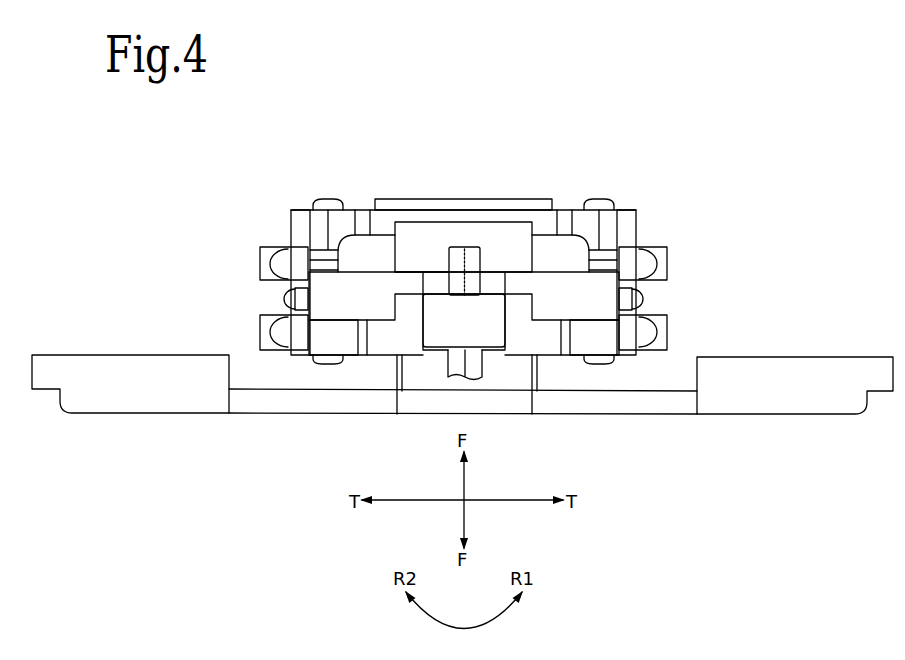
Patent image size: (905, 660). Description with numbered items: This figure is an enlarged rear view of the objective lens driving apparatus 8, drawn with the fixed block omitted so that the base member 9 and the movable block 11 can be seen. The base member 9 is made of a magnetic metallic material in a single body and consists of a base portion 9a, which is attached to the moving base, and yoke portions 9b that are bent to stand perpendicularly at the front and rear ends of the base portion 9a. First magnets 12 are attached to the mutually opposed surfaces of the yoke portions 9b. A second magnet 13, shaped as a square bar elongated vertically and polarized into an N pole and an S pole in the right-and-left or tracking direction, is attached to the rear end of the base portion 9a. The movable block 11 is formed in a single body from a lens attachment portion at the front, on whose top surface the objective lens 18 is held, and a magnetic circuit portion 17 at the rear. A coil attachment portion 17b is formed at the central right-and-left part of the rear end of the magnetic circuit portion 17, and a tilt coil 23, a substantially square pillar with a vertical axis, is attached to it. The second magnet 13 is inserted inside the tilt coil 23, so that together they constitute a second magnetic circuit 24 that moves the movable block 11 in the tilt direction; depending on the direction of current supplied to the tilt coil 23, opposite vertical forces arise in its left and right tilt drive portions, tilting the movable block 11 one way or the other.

The objective lens driving apparatus 8 is at (517, 286).
The base member 9 is at (462, 415).
The base portion 9a is at (305, 405).
The yoke portions 9b is at (512, 382).
The movable block 11 is at (561, 225).
The first magnets 12 is at (502, 233).
The second magnet 13 is at (468, 248).
The magnetic circuit portion 17 is at (375, 307).
The coil attachment portion 17b is at (515, 318).
The objective lens 18 is at (445, 200).
The tilt coil 23 is at (422, 333).
The second magnetic circuit 24 is at (440, 265).